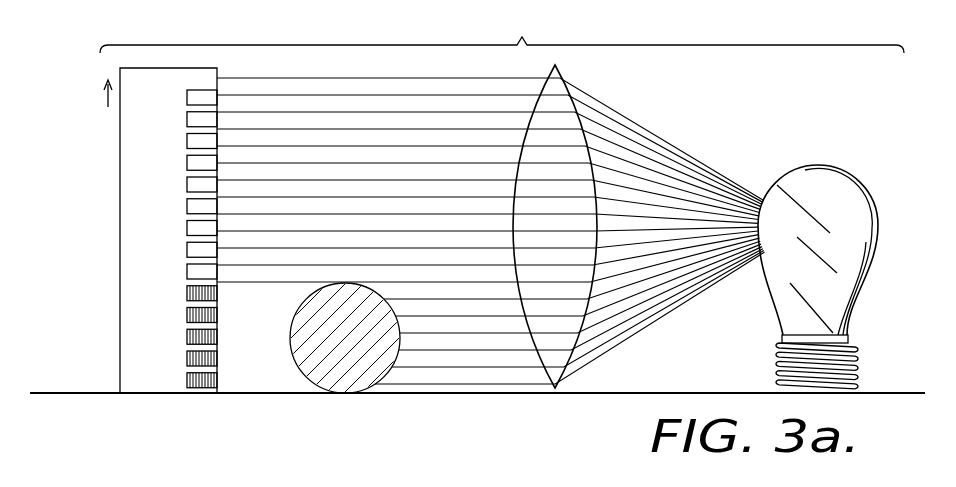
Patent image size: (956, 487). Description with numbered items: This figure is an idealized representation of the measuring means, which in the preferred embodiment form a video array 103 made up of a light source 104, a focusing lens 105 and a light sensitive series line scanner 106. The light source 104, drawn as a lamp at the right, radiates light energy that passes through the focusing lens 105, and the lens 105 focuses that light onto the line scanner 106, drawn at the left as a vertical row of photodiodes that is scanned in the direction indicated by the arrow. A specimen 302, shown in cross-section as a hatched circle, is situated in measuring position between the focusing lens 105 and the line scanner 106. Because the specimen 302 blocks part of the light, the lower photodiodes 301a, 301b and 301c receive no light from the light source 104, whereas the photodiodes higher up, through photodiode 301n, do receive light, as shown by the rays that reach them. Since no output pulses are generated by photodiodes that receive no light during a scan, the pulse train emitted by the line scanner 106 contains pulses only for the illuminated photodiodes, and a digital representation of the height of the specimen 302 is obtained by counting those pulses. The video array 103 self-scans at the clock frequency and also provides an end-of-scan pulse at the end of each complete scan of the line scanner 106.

The video array 103 is at (502, 32).
The light source 104 is at (810, 167).
The focusing lens 105 is at (562, 80).
The series line scanner 106 is at (120, 68).
The photodiode 301n is at (214, 95).
The photodiode 301c is at (217, 338).
The photodiode 301b is at (217, 356).
The photodiode 301a is at (217, 378).
The specimen 302 is at (353, 383).